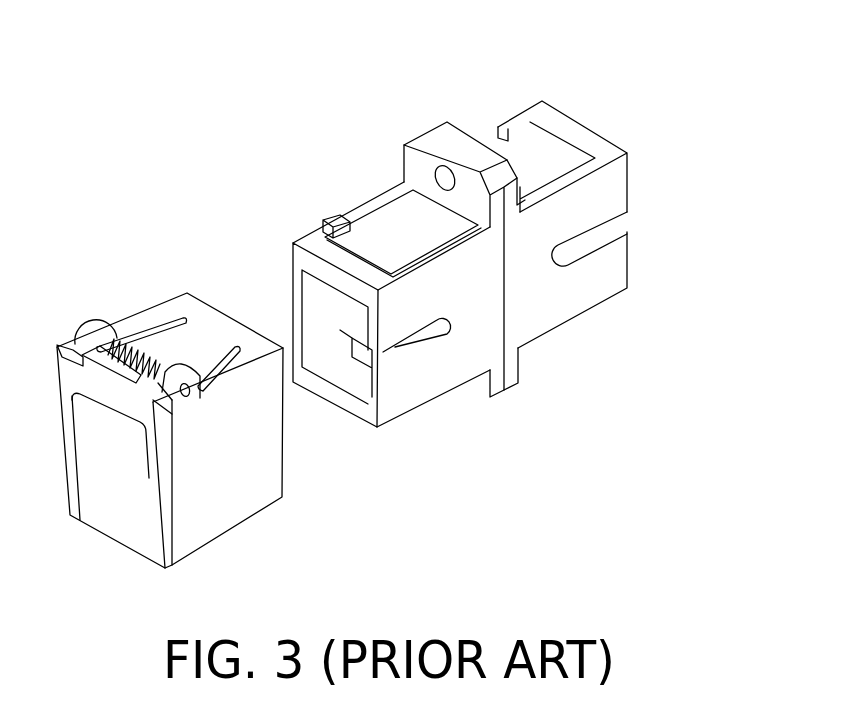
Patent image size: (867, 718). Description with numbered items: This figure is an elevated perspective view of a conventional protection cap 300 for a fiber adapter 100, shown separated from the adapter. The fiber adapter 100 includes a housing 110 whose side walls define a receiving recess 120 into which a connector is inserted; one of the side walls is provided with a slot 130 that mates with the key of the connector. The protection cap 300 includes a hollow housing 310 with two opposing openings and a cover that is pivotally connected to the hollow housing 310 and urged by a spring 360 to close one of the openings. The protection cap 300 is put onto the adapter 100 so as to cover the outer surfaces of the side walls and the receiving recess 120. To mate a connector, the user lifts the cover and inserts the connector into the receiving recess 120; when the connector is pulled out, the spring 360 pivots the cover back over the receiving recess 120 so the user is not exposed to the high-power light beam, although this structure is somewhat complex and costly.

The fiber adapter 100 is at (548, 85).
The housing 110 is at (322, 220).
The receiving recess 120 is at (352, 362).
The slot 130 is at (397, 345).
The protection cap 300 is at (177, 227).
The hollow housing 310 is at (173, 310).
The spring 360 is at (128, 345).